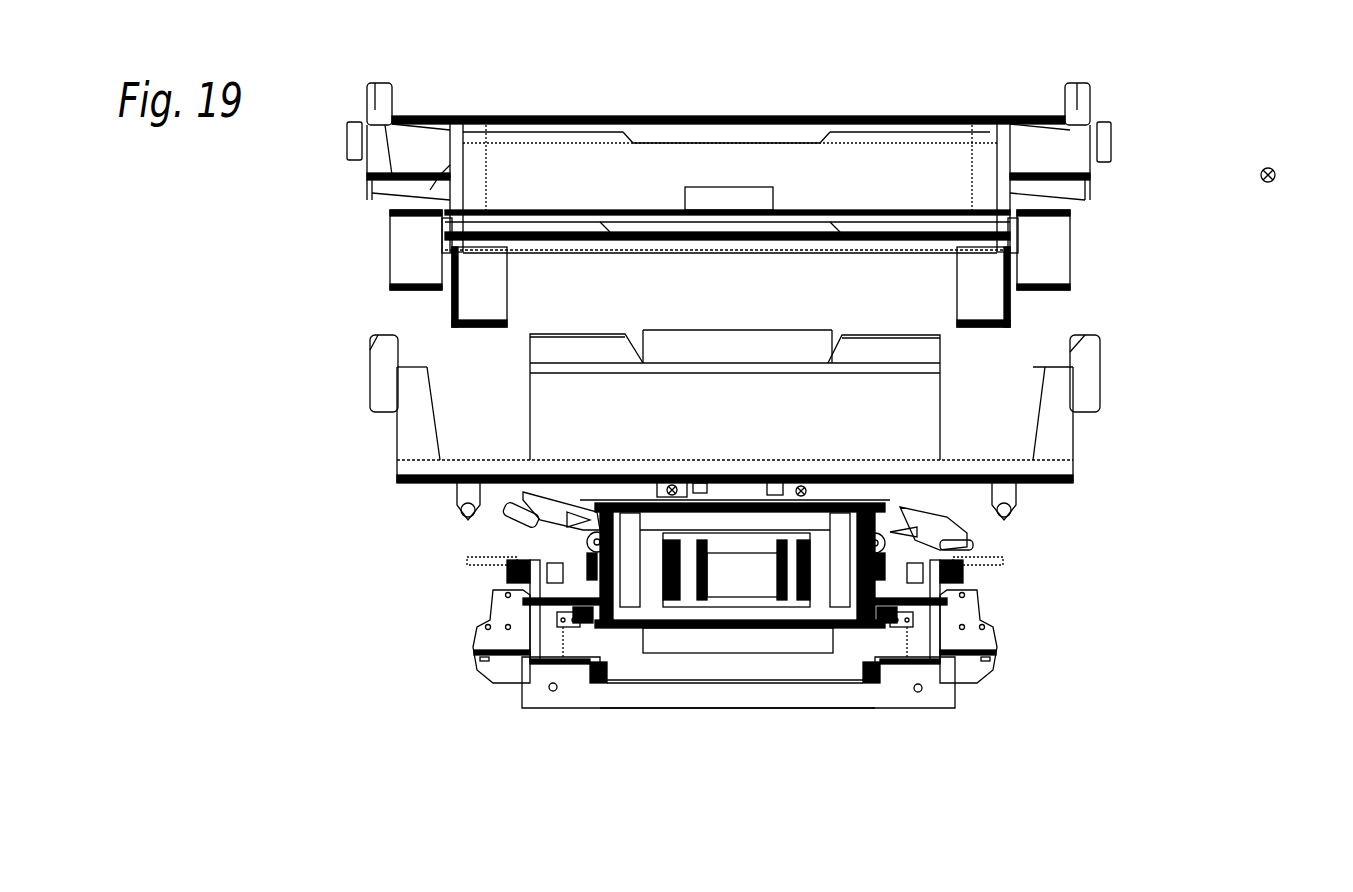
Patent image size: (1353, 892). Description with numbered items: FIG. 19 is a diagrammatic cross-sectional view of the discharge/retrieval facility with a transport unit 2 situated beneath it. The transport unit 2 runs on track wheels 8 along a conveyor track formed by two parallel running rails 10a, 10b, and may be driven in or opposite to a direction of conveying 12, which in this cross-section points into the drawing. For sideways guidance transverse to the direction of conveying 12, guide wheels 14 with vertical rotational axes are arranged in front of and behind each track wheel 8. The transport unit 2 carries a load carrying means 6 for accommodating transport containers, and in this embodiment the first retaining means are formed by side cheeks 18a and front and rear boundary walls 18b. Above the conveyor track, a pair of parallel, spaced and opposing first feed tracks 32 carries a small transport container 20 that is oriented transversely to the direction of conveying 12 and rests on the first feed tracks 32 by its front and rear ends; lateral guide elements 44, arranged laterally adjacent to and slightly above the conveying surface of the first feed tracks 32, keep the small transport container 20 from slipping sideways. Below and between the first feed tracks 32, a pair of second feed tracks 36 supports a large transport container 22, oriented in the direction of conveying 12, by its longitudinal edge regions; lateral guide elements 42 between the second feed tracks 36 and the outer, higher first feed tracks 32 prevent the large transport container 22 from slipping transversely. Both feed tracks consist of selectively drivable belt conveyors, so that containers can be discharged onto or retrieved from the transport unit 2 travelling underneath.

The transport unit 2 is at (590, 538).
The load carrying means 6 is at (513, 463).
The track wheels 8 is at (557, 642).
The running rail 10a is at (590, 675).
The running rail 10b is at (882, 663).
The direction of conveying 12 is at (1276, 177).
The guide wheels 14 is at (503, 572).
The side cheeks 18a is at (370, 380).
The front and rear boundary walls 18b is at (873, 407).
The small transport container 20 is at (413, 138).
The large transport container 22 is at (883, 160).
The first feed tracks 32 is at (440, 232).
The second feed tracks 36 is at (440, 295).
The lateral guide elements 42 is at (447, 257).
The lateral guide elements 44 is at (350, 143).